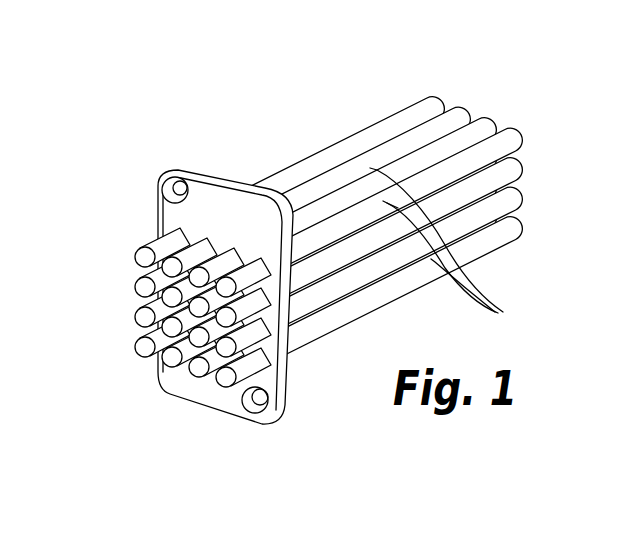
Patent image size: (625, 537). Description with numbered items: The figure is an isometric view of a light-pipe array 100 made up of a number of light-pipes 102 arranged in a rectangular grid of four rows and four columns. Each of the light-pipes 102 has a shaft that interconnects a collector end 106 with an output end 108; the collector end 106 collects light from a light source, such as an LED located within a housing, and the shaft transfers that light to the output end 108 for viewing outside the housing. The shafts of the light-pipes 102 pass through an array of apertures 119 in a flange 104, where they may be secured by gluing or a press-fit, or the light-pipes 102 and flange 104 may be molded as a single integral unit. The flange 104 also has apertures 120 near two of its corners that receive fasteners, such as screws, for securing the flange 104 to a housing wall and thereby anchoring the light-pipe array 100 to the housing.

The light-pipe array 100 is at (293, 235).
The light-pipes 102 is at (454, 248).
The flange 104 is at (195, 295).
The collector end 106 is at (500, 117).
The output end 108 is at (199, 310).
The apertures 119 is at (250, 344).
The apertures 120 is at (178, 189).